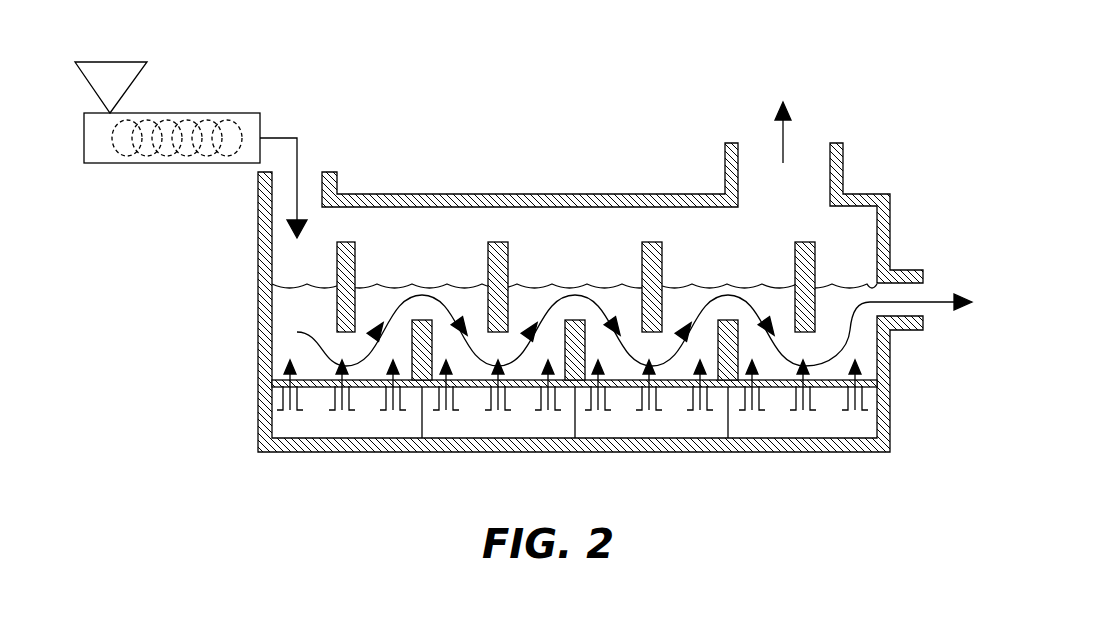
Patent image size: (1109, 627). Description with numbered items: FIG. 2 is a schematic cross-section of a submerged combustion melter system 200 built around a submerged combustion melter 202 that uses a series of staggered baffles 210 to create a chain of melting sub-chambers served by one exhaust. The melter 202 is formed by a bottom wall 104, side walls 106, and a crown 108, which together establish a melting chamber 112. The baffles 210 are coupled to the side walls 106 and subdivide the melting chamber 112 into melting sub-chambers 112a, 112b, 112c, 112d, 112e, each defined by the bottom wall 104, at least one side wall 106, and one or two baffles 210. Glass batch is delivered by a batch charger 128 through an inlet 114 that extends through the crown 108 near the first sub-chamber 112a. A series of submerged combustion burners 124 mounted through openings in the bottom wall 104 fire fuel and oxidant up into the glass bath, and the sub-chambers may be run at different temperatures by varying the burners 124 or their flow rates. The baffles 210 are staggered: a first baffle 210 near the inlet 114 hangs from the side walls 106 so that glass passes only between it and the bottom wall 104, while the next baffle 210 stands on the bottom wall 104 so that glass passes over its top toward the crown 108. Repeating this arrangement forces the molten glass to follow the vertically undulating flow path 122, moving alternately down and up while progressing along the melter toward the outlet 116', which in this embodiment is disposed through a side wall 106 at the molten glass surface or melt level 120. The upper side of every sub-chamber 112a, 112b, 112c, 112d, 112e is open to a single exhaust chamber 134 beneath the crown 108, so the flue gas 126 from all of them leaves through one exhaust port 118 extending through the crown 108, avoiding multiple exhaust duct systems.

The submerged combustion melter system 200 is at (210, 418).
The submerged combustion melter 202 is at (530, 78).
The bottom wall 104 is at (279, 381).
The side wall 106 is at (265, 252).
The crown 108 is at (598, 194).
The melting chamber 112 is at (563, 252).
The first melting sub-chamber 112a is at (315, 251).
The second melting sub-chamber 112b is at (421, 254).
The third melting sub-chamber 112c is at (636, 257).
The fourth melting sub-chamber 112d is at (760, 259).
The fifth melting sub-chamber 112e is at (859, 229).
The inlet 114 is at (308, 172).
The outlet 116' is at (929, 353).
The exhaust port 118 is at (755, 143).
The molten glass level 120 is at (853, 288).
The undulating flow path 122 is at (296, 332).
The submerged combustion burner 124 is at (336, 413).
The flue gas 126 is at (784, 132).
The batch charger 128 is at (130, 75).
The exhaust chamber 134 is at (538, 240).
The baffle 210 is at (347, 242).